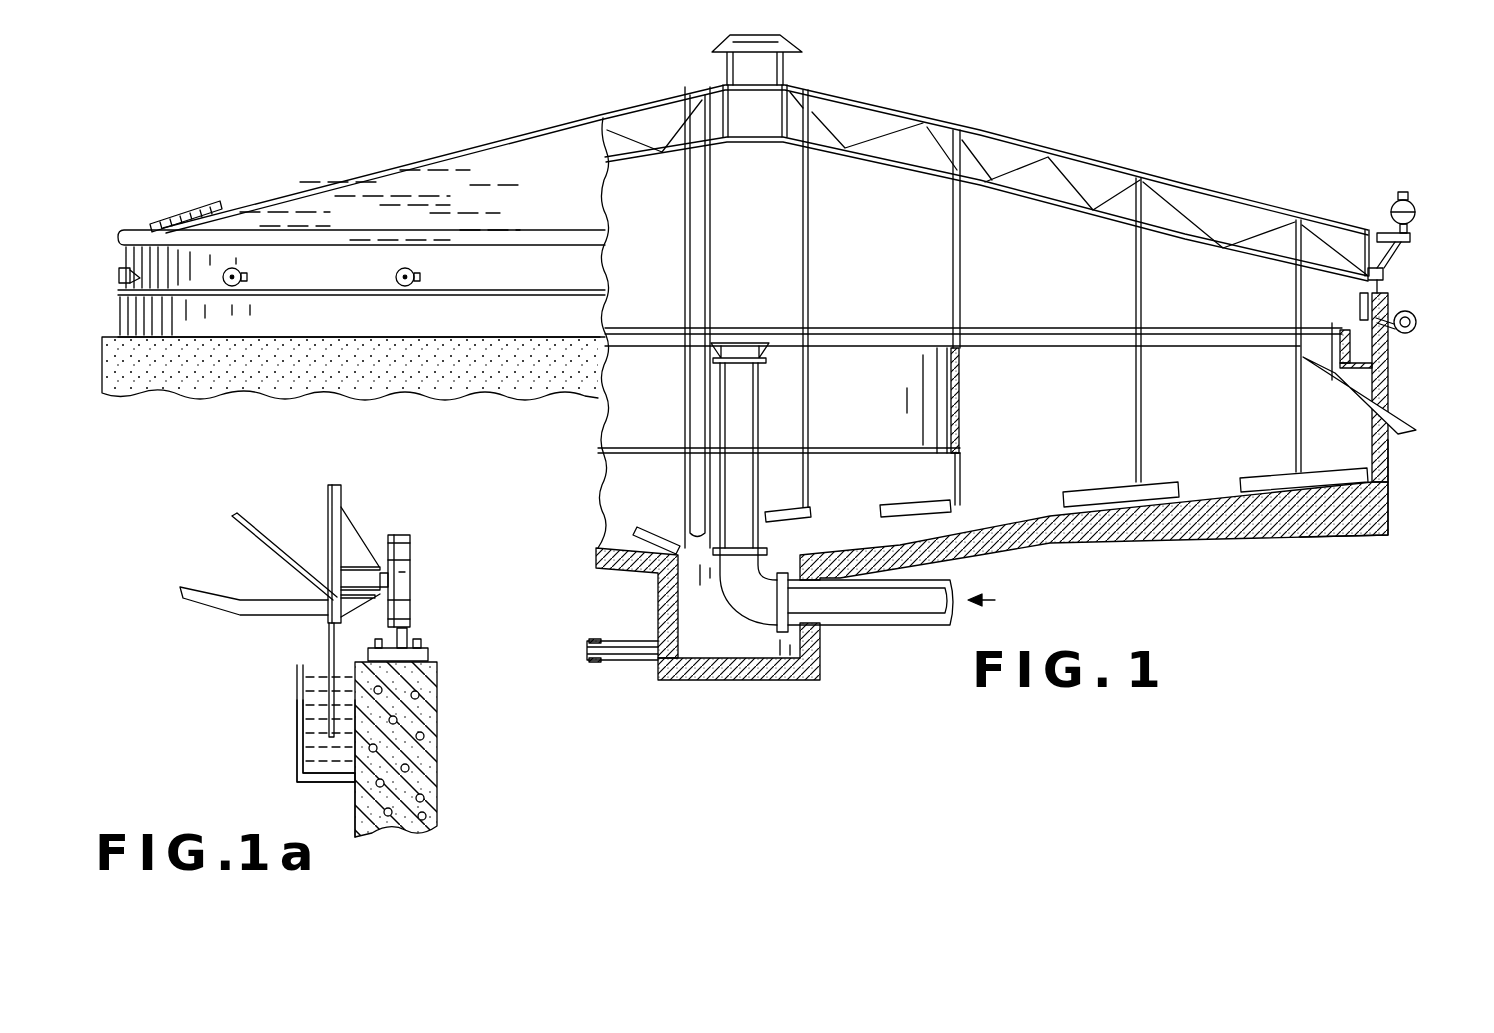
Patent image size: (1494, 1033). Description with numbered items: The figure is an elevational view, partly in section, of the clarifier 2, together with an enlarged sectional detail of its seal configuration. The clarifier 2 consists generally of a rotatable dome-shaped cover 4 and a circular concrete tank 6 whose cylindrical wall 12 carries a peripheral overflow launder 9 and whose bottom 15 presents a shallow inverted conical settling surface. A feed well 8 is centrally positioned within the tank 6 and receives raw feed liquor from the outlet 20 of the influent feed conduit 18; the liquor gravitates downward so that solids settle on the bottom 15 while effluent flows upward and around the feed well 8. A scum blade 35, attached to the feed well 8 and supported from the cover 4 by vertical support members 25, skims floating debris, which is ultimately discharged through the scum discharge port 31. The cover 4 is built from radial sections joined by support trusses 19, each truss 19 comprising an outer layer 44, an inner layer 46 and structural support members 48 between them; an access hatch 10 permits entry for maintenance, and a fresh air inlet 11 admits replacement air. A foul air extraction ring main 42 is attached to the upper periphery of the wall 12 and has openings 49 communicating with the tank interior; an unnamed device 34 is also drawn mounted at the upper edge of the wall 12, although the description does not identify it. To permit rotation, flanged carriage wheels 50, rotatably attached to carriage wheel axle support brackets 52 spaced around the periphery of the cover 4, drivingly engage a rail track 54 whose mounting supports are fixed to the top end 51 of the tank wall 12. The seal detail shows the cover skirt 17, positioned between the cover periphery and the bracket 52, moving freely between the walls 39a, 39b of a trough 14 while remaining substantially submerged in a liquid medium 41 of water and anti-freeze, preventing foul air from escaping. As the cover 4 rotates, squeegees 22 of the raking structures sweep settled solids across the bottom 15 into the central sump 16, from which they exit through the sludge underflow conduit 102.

In FIG. 1, the clarifier 2 is at (1000, 123).
In FIG. 1, the rotatable cover 4 is at (536, 202).
In FIG. 1, the tank 6 is at (1392, 508).
In FIG. 1, the feed well 8 is at (958, 402).
In FIG. 1, the peripheral overflow launder 9 is at (1350, 355).
In FIG. 1, the access hatch 10 is at (188, 216).
In FIG. 1, the fresh air inlet 11 is at (772, 75).
In FIG. 1, the tank wall 12 is at (215, 320).
In FIG. 1, the trough 14 is at (1363, 303).
In FIG. 1a, the trough 14 is at (297, 746).
In FIG. 1, the tank bottom 15 is at (1058, 498).
In FIG. 1, the sump 16 is at (725, 637).
In FIG. 1a, the cover skirt 17 is at (326, 643).
In FIG. 1, the influent feed conduit 18 is at (740, 426).
In FIG. 1, the support truss 19 is at (1117, 172).
In FIG. 1, the outlet 20 is at (742, 342).
In FIG. 1, the squeegee 22 is at (808, 517).
In FIG. 1, the vertical support member 25 is at (955, 250).
In FIG. 1, the scum discharge port 31 is at (1410, 436).
In FIG. 1, the drive unit 34 is at (1398, 192).
In FIG. 1, the scum blade 35 is at (1165, 350).
In FIG. 1a, the trough wall 39a is at (300, 757).
In FIG. 1a, the trough wall 39b is at (360, 781).
In FIG. 1a, the liquid medium 41 is at (313, 708).
In FIG. 1, the foul air extraction ring main 42 is at (1415, 315).
In FIG. 1, the outer layer 44 is at (888, 108).
In FIG. 1, the inner layer 46 is at (1062, 214).
In FIG. 1a, the inner layer 46 is at (200, 607).
In FIG. 1, the structural support member 48 is at (927, 150).
In FIG. 1a, the structural support member 48 is at (240, 533).
In FIG. 1, the opening 49 is at (1392, 335).
In FIG. 1, the flanged carriage wheel 50 is at (121, 268).
In FIG. 1a, the flanged carriage wheel 50 is at (400, 557).
In FIG. 1a, the top end of tank wall 51 is at (425, 662).
In FIG. 1a, the carriage wheel axle support bracket 52 is at (348, 522).
In FIG. 1a, the rail track 54 is at (410, 636).
In FIG. 1, the sludge underflow conduit 102 is at (642, 662).